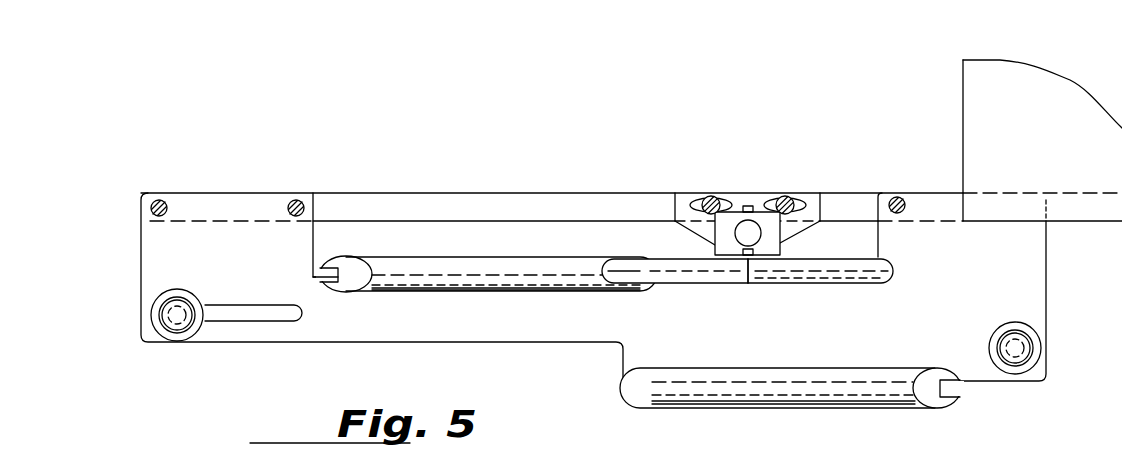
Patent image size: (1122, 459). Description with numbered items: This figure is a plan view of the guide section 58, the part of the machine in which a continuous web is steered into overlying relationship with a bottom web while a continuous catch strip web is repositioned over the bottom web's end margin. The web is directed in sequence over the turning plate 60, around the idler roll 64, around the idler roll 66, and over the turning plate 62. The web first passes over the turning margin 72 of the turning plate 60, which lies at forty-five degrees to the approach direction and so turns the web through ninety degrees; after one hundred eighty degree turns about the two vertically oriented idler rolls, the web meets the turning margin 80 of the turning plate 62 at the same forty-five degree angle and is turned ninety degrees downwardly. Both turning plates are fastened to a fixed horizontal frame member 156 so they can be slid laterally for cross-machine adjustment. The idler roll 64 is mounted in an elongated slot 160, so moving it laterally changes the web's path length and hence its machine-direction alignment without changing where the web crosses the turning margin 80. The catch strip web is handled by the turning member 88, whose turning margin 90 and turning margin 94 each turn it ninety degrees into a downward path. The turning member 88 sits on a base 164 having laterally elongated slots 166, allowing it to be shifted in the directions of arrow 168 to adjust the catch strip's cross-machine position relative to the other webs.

The guide section 58 is at (590, 362).
The turning plate 60 is at (474, 258).
The turning plate 62 is at (680, 415).
The idler roll 64 is at (162, 317).
The idler roll 66 is at (1027, 352).
The turning margin 72 is at (413, 258).
The turning margin 80 is at (890, 400).
The turning member 88 is at (743, 282).
The turning margin 90 is at (707, 270).
The turning margin 94 is at (840, 268).
The horizontal frame member 156 is at (508, 200).
The elongated slot 160 is at (273, 313).
The base 164 is at (811, 200).
The laterally elongated slots 166 is at (697, 196).
The arrow 168 is at (763, 458).